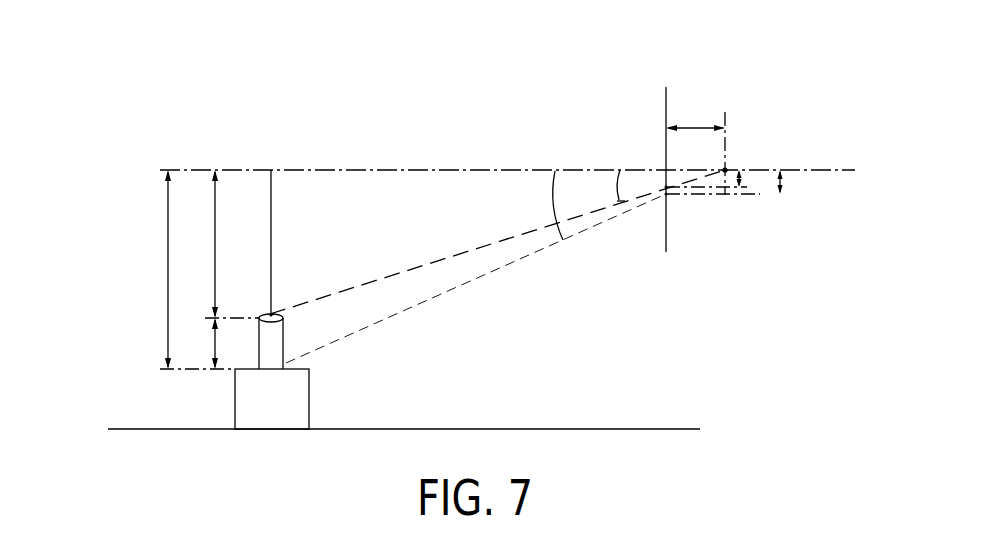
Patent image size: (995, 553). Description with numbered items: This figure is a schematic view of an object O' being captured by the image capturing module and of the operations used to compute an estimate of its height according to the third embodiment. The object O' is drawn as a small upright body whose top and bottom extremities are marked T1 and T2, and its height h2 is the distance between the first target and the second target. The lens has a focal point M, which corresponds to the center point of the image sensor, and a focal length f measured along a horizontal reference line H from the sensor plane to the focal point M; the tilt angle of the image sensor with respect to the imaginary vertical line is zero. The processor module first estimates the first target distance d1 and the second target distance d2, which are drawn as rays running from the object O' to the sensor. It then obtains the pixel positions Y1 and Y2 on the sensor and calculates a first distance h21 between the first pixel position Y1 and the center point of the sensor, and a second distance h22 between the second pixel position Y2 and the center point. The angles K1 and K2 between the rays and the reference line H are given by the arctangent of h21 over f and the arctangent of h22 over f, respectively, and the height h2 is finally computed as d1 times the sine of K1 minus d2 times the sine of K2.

The horizontal reference line H is at (839, 168).
The object O' is at (254, 284).
The first object point T1 is at (285, 367).
The second object point T2 is at (274, 313).
The first target distance d1 is at (476, 278).
The second target distance d2 is at (497, 242).
The height of the object h2 is at (199, 343).
The first angle K1 is at (538, 205).
The second angle K2 is at (603, 185).
The first target / first pixel position Y1 is at (668, 195).
The second target / second pixel position Y2 is at (666, 186).
The focal point M is at (726, 169).
The focal length f is at (695, 115).
The first distance h21 is at (803, 183).
The second distance h22 is at (762, 165).